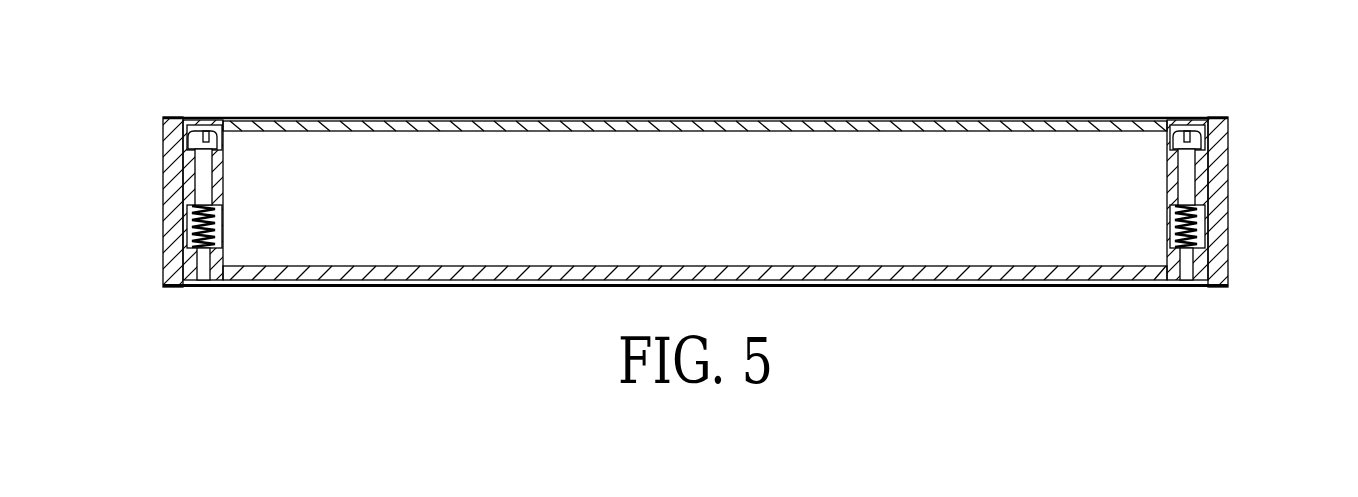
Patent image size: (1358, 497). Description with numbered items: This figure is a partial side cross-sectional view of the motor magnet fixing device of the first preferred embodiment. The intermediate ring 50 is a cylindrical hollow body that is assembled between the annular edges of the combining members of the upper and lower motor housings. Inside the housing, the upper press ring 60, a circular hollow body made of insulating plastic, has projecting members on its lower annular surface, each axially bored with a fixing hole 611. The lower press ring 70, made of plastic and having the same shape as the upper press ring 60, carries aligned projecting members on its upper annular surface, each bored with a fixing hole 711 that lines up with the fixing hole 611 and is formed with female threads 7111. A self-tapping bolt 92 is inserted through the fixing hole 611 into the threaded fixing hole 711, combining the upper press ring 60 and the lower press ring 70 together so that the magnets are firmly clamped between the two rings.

The intermediate ring 50 is at (152, 203).
The upper press ring 60 is at (1230, 153).
The fixing hole 611 is at (1203, 168).
The self-tapping bolt 92 is at (1183, 140).
The fixing hole 711 is at (1193, 228).
The female threads 7111 is at (185, 252).
The lower press ring 70 is at (1226, 245).